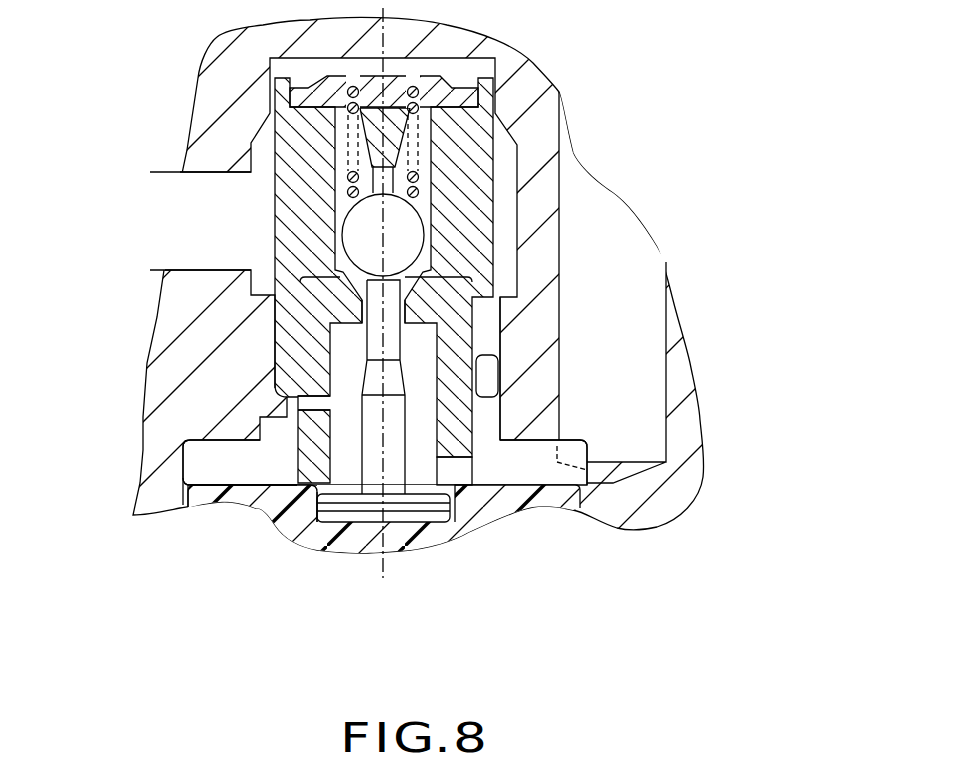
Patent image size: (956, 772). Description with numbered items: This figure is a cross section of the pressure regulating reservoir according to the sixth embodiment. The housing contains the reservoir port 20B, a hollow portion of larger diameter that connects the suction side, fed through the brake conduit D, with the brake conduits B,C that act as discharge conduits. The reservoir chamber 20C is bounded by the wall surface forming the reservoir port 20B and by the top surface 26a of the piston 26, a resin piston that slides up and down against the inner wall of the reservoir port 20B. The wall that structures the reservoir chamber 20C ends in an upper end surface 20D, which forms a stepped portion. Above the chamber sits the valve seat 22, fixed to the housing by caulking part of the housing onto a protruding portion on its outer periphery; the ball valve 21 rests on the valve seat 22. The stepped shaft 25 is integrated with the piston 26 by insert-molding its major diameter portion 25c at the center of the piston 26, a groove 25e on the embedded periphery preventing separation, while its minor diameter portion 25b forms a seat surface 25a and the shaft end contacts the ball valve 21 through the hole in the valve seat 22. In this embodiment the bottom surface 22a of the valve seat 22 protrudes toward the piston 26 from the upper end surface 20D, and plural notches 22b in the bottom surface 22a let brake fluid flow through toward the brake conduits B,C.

The brake conduits B,C is at (560, 182).
The brake conduit D is at (212, 172).
The ball valve 21 is at (357, 230).
The valve seat 22 is at (500, 327).
The bottom surface of the valve seat 22a is at (335, 497).
The notches 22b is at (460, 468).
The shaft 25 is at (355, 403).
The seat surface 25a is at (360, 301).
The minor diameter portion 25b is at (370, 342).
The major diameter portion 25c is at (231, 488).
The groove 25e is at (322, 507).
The piston 26 is at (540, 502).
The top surface of the piston 26a is at (203, 476).
The reservoir port 20B is at (583, 447).
The reservoir chamber 20C is at (197, 452).
The upper end surface 20D is at (555, 408).